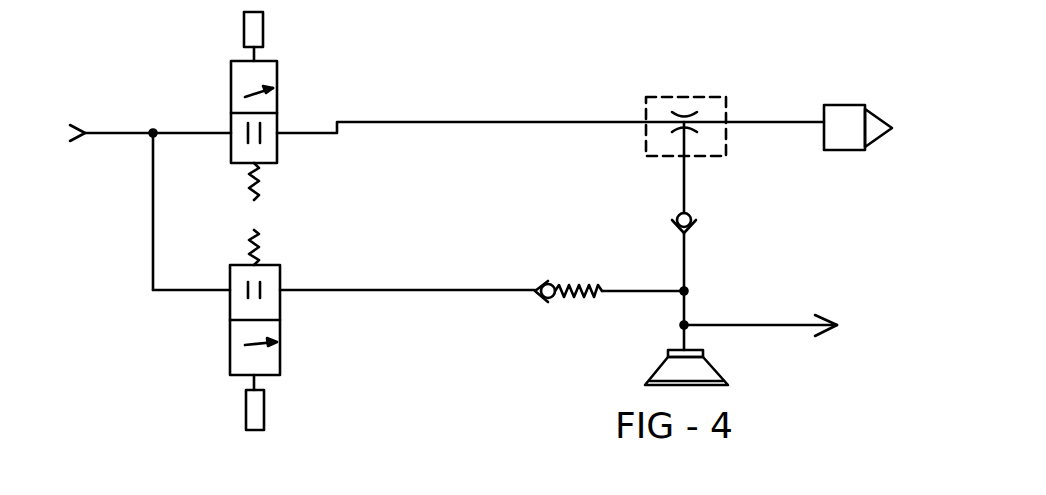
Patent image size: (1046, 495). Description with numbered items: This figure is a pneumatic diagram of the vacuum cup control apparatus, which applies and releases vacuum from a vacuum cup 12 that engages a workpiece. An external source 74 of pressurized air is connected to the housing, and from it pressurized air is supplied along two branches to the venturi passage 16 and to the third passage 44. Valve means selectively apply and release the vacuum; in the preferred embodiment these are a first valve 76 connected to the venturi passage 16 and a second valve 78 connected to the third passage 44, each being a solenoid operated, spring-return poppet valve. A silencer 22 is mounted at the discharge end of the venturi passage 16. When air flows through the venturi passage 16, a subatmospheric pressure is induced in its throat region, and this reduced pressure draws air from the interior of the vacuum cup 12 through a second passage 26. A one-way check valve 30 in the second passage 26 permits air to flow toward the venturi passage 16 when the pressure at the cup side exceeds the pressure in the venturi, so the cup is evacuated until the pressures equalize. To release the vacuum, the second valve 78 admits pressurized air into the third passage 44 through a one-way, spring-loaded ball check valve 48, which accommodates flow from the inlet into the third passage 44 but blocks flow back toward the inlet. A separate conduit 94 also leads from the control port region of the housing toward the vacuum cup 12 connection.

The vacuum cup 12 is at (648, 369).
The venturi passage 16 is at (646, 97).
The silencer 22 is at (832, 108).
The second passage 26 is at (684, 175).
The one-way check valve 30 is at (697, 218).
The third passage 44 is at (401, 292).
The spring-loaded ball check valve 48 is at (568, 285).
The source of pressurized air 74 is at (85, 131).
The first valve 76 is at (226, 78).
The second valve 78 is at (226, 342).
The conduit 94 is at (826, 321).